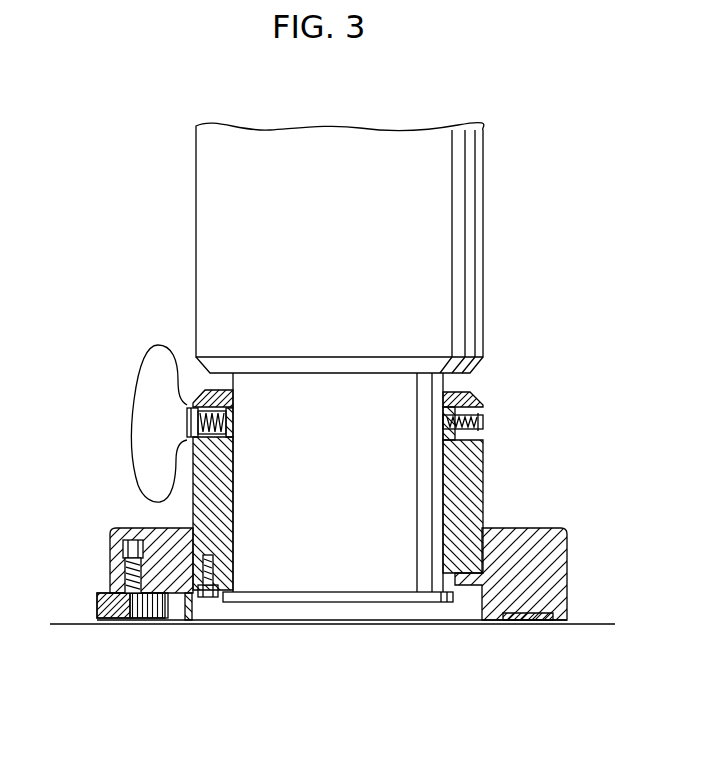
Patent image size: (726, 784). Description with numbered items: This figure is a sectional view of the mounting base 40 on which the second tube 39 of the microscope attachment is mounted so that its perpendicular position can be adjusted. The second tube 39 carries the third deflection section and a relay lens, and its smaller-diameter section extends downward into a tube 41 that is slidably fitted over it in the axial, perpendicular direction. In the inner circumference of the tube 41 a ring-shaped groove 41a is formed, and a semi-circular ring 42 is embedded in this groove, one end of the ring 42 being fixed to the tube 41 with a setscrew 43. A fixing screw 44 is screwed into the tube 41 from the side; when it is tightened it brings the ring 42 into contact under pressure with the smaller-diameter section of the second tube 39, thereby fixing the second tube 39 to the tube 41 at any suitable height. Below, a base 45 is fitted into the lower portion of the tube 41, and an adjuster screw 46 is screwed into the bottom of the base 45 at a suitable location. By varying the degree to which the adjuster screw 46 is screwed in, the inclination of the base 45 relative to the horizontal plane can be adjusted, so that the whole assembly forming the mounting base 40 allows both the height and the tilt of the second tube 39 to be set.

The second tube 39 is at (484, 217).
The mounting base 40 is at (483, 501).
The tube 41 is at (477, 463).
The ring-shaped groove 41a is at (229, 392).
The semi-circular ring 42 is at (207, 388).
The setscrew 43 is at (474, 396).
The fixing screw 44 is at (137, 374).
The base 45 is at (568, 557).
The adjuster screw 46 is at (123, 571).